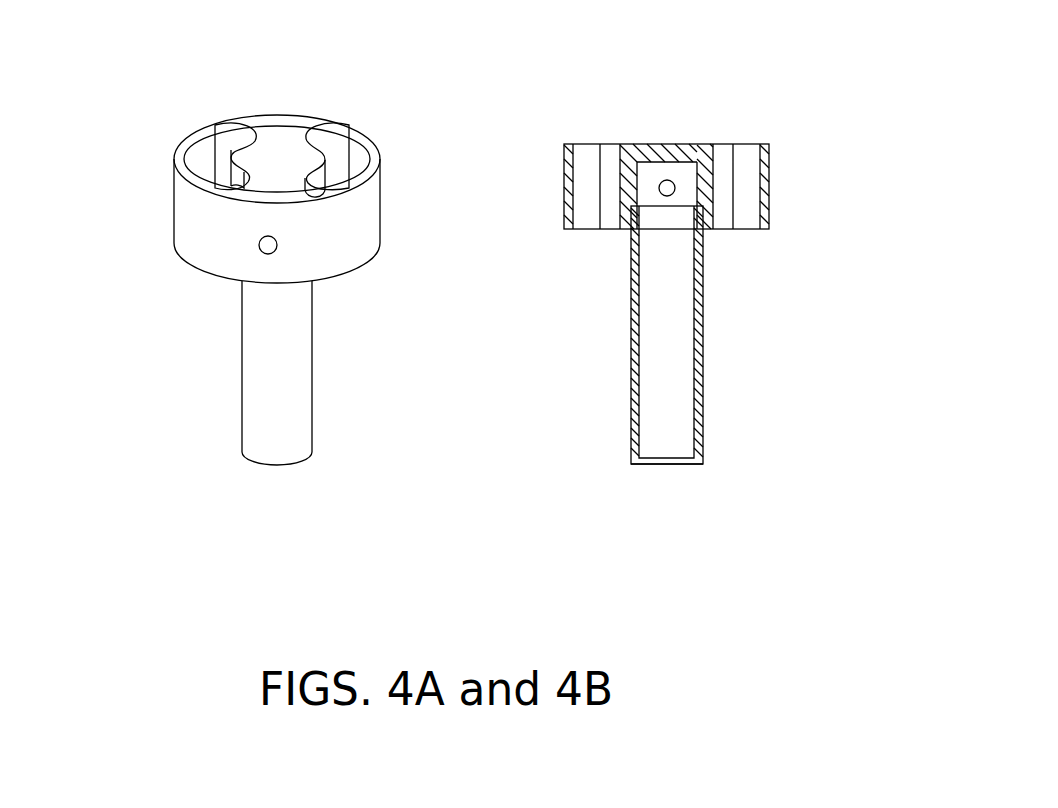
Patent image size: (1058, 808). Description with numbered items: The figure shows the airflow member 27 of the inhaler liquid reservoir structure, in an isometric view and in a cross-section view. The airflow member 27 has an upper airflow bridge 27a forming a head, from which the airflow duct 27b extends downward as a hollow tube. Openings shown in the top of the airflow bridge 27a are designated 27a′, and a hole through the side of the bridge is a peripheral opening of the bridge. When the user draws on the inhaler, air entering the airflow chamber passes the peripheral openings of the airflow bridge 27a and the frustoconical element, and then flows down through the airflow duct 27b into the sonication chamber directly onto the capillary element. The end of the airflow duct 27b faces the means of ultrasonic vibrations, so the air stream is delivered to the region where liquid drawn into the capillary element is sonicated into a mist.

In FIG. 4A, the airflow member 27 is at (170, 102).
In FIG. 4B, the airflow member 27 is at (608, 86).
In FIG. 4A, the airflow bridge 27a is at (181, 272).
In FIG. 4B, the airflow bridge 27a is at (552, 138).
In FIG. 4A, the slots in pin head 27a′ is at (215, 135).
In FIG. 4A, the airflow duct 27b is at (228, 473).
In FIG. 4B, the airflow duct 27b is at (735, 307).